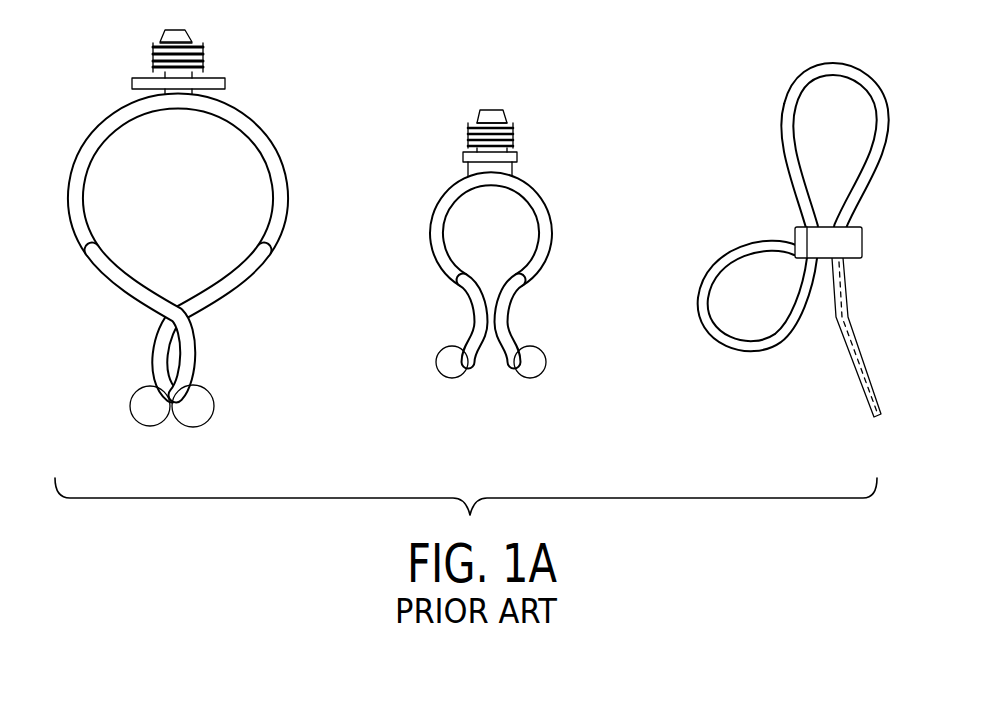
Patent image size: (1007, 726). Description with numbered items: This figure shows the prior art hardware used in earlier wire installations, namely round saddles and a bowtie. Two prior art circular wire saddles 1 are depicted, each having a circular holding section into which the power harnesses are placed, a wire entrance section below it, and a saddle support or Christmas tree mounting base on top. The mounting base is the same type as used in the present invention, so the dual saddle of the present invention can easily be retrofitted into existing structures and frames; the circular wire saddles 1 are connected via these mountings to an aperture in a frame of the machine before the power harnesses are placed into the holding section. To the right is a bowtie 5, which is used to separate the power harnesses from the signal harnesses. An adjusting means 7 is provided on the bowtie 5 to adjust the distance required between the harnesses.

The circular wire saddle 1 is at (311, 248).
The bowtie 5 is at (784, 250).
The adjusting means 7 is at (835, 243).